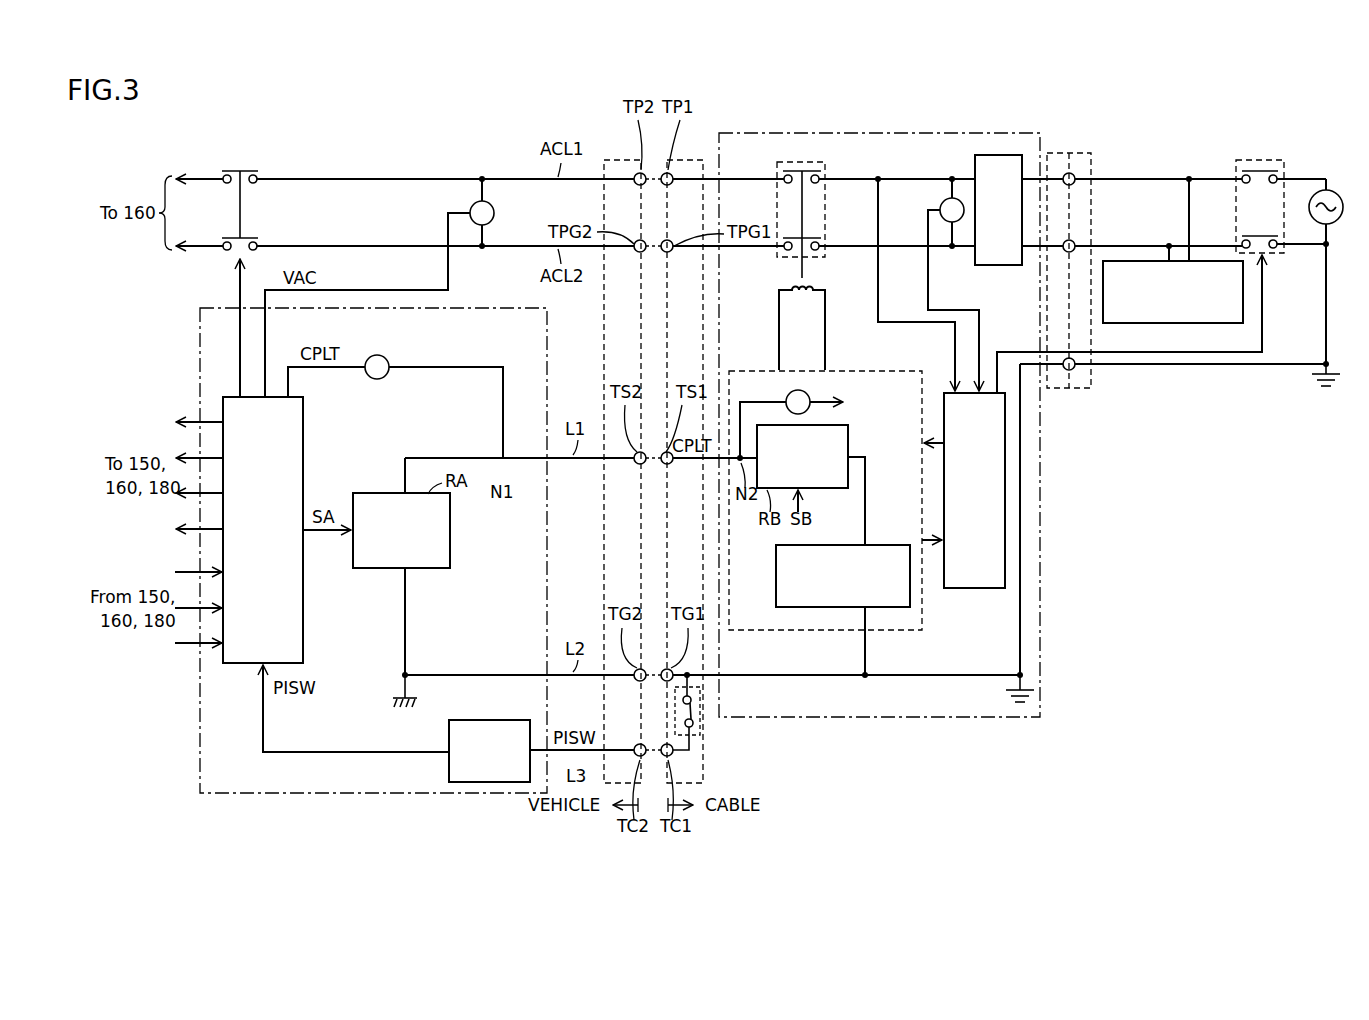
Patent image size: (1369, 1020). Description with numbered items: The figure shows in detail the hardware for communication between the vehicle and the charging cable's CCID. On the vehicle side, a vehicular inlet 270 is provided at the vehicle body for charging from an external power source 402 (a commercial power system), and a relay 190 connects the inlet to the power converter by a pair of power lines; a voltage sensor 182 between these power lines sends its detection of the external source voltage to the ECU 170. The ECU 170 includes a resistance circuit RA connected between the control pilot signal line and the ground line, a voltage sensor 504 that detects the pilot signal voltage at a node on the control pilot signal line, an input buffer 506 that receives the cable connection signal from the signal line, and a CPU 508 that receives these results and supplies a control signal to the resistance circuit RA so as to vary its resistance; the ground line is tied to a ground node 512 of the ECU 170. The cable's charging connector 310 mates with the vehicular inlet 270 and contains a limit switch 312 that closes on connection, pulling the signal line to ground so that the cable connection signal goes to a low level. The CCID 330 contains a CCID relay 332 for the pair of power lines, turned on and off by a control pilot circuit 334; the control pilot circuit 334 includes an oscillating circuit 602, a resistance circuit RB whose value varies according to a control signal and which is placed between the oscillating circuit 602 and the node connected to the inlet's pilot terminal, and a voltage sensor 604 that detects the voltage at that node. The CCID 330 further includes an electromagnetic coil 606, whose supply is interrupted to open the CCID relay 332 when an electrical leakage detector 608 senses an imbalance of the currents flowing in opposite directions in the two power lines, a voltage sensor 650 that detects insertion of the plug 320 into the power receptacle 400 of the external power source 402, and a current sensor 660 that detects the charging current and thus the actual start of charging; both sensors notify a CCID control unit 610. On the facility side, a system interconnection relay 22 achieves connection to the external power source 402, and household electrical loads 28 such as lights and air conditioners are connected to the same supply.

The relay 190 is at (240, 171).
The voltage sensor 182 is at (495, 213).
The ECU 170 is at (515, 307).
The voltage sensor 504 is at (386, 357).
The CPU 508 is at (240, 665).
The ground node 512 is at (402, 710).
The resistance circuit RA is at (401, 530).
The input buffer 506 is at (493, 720).
The vehicular inlet 270 is at (614, 159).
The charging connector 310 is at (702, 159).
The limit switch 312 is at (700, 725).
The charging circuit interrupt device (CCID) 330 is at (962, 133).
The CCID relay 332 is at (802, 158).
The electromagnetic coil 606 is at (784, 284).
The current sensor 660 is at (878, 183).
The voltage sensor 650 is at (945, 198).
The electrical leakage detector 608 is at (1003, 266).
The plug 320 is at (1054, 152).
The power receptacle 400 is at (1080, 152).
The household electrical loads 28 is at (1203, 323).
The system interconnection relay 22 is at (1268, 159).
The external power source 402 is at (1334, 190).
The control pilot circuit 334 is at (800, 631).
The voltage sensor 604 is at (811, 395).
The resistance circuit RB is at (805, 456).
The oscillating circuit 602 is at (888, 545).
The CCID control unit 610 is at (976, 590).